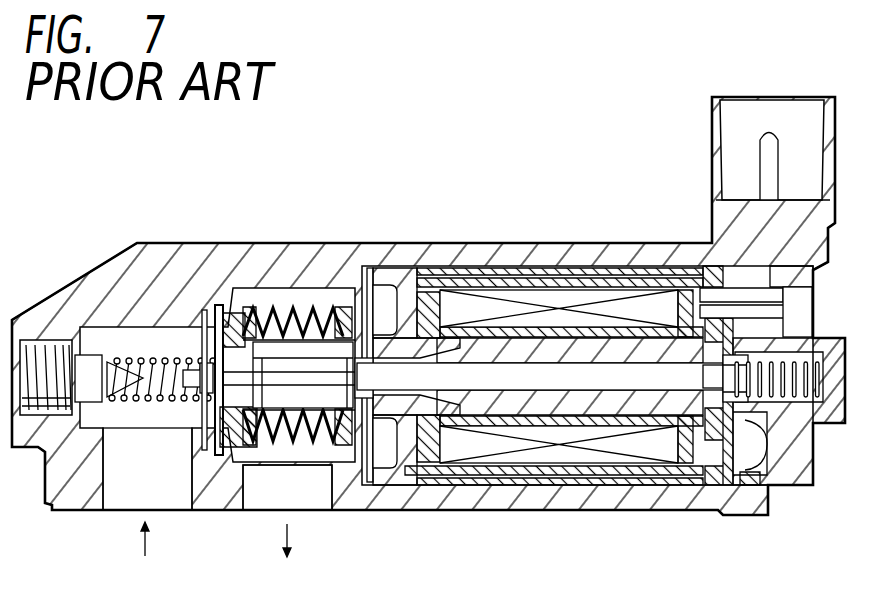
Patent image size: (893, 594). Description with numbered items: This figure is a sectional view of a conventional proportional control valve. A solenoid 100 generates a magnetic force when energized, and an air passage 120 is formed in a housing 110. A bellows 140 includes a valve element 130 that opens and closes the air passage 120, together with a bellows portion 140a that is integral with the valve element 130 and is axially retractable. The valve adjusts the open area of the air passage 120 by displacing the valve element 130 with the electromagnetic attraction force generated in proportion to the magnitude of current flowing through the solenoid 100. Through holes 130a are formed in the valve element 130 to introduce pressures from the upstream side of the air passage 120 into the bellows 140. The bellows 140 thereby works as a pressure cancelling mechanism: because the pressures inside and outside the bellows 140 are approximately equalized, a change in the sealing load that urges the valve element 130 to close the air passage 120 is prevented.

The solenoid 100 is at (557, 300).
The housing 110 is at (302, 243).
The air passage 120 is at (161, 485).
The valve element 130 is at (233, 312).
The through holes 130a is at (235, 405).
The bellows 140 is at (325, 298).
The bellows portion 140a is at (285, 307).